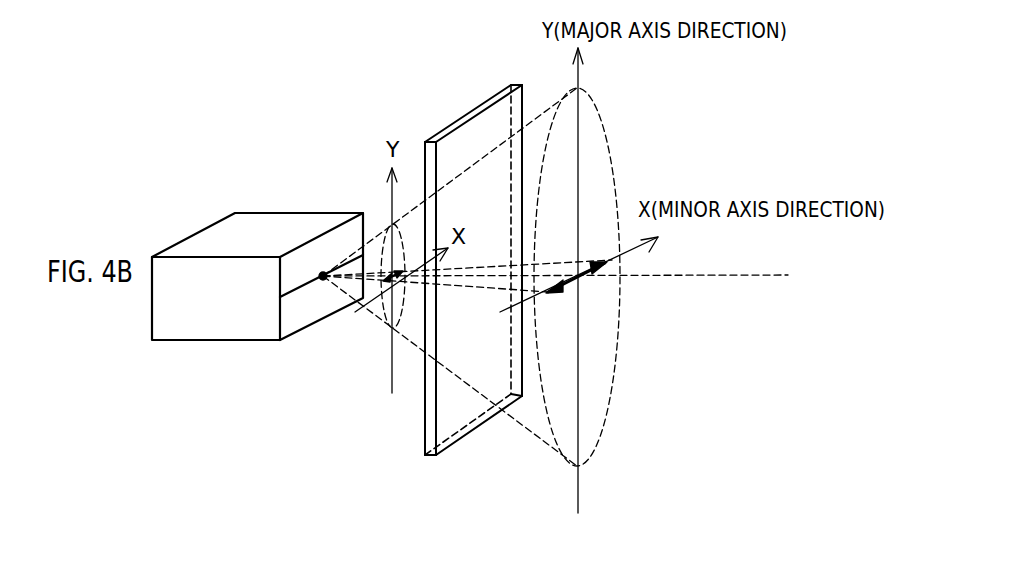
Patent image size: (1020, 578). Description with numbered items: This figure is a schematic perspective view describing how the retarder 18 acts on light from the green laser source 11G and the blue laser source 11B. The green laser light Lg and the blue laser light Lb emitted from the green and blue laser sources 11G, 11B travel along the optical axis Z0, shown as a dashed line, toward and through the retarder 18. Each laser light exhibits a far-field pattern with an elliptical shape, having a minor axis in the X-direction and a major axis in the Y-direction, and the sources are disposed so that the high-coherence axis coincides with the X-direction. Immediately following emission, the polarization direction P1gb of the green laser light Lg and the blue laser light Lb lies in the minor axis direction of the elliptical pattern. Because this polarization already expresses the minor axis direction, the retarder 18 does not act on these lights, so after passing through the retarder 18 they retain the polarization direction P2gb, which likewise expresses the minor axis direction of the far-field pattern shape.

The green laser source 11G is at (252, 238).
The blue laser source 11B is at (248, 232).
The green laser light Lg is at (424, 274).
The blue laser light Lb is at (381, 240).
The retarder 18 is at (478, 113).
The optical axis Z0 is at (758, 270).
The polarization direction of green and blue laser light immediately following emiss P1gb is at (399, 284).
The polarization direction of green and blue laser light following passage of the re P2gb is at (588, 277).